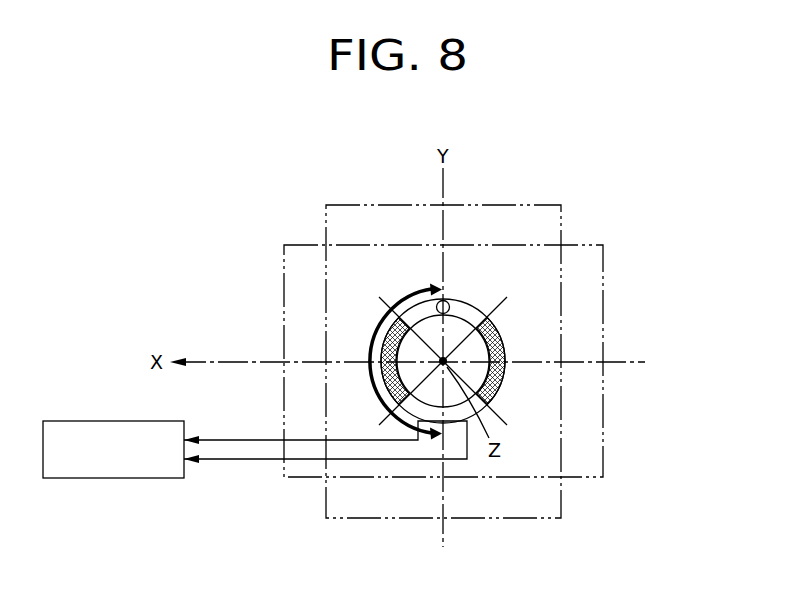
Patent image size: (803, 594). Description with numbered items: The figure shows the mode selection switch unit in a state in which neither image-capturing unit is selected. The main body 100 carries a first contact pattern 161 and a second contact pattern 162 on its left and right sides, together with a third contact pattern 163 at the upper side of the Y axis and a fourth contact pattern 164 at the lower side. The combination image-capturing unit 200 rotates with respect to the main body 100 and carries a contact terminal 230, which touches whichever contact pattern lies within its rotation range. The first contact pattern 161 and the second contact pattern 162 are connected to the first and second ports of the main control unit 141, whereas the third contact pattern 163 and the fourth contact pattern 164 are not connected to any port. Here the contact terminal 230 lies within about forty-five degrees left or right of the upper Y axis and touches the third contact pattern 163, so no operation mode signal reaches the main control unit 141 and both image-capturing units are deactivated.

The main body 100 is at (284, 270).
The combination image-capturing unit 200 is at (561, 224).
The main control unit 141 is at (79, 421).
The first contact pattern 161 is at (386, 386).
The second contact pattern 162 is at (497, 385).
The third contact pattern 163 is at (449, 301).
The fourth contact pattern 164 is at (453, 421).
The contact terminal 230 is at (438, 293).